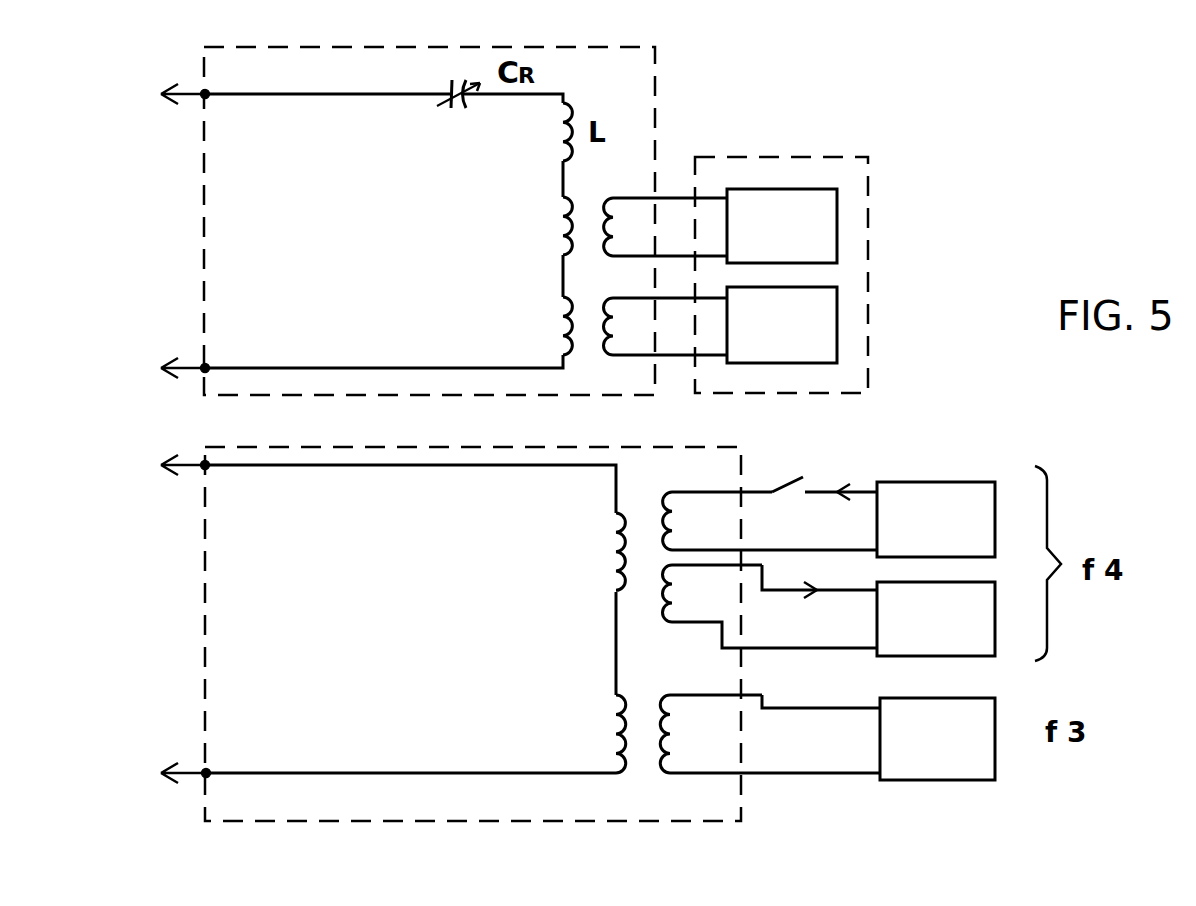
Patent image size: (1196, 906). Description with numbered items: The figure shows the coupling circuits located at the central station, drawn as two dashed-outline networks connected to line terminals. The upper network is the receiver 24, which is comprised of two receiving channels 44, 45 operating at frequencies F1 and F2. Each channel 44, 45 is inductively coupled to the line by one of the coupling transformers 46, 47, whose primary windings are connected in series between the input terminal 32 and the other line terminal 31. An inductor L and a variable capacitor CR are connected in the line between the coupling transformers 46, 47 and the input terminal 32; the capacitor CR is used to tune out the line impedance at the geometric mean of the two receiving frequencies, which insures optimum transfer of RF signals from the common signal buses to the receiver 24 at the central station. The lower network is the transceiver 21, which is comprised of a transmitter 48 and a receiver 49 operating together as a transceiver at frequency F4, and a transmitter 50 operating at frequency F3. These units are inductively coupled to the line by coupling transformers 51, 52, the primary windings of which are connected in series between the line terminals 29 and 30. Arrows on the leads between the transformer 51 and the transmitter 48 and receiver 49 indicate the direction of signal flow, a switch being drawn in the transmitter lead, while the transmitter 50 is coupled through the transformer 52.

The transceiver 21 is at (994, 447).
The receiver 24 is at (864, 258).
The line terminal 29 is at (200, 465).
The line terminal 30 is at (200, 768).
The line terminal 31 is at (200, 363).
The input terminal 32 is at (202, 93).
The receiving channel 44 is at (840, 190).
The receiving channel 45 is at (840, 333).
The coupling transformer 46 is at (558, 223).
The coupling transformer 47 is at (558, 323).
The transmitter 48 is at (1000, 502).
The receiver 49 is at (1000, 628).
The transmitter 50 is at (999, 763).
The coupling transformer 51 is at (610, 555).
The coupling transformer 52 is at (615, 733).